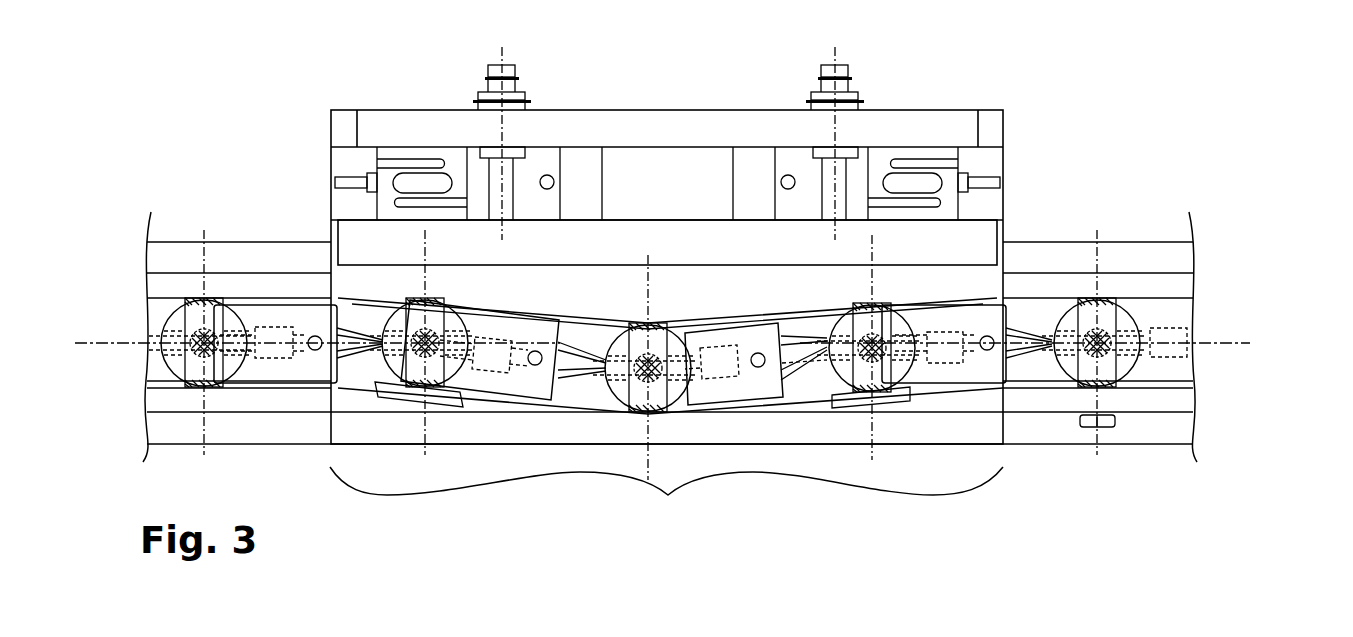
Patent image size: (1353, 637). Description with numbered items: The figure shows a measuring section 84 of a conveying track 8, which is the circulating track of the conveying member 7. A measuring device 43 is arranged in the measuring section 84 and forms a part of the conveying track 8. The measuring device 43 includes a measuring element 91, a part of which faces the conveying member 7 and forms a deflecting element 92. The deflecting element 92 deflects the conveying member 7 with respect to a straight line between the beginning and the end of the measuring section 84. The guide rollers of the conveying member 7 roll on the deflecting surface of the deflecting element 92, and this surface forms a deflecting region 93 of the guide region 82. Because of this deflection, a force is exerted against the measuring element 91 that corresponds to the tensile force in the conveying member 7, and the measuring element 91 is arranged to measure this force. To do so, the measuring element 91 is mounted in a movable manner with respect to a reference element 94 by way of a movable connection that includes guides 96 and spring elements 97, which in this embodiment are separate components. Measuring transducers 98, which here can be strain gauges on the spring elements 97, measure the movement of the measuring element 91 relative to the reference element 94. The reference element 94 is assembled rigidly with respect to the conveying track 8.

The measuring device 43 is at (387, 83).
The conveying track 8 is at (283, 253).
The reference element 94 is at (648, 134).
The guide 96 is at (506, 191).
The spring element 97 is at (893, 153).
The measuring transducer 98 is at (925, 192).
The measuring element 91 is at (922, 248).
The deflecting element 92 is at (953, 283).
The deflecting region 93 is at (747, 317).
The guide region 82 is at (161, 304).
The conveying member 7 is at (1233, 360).
The measuring section 84 is at (666, 498).